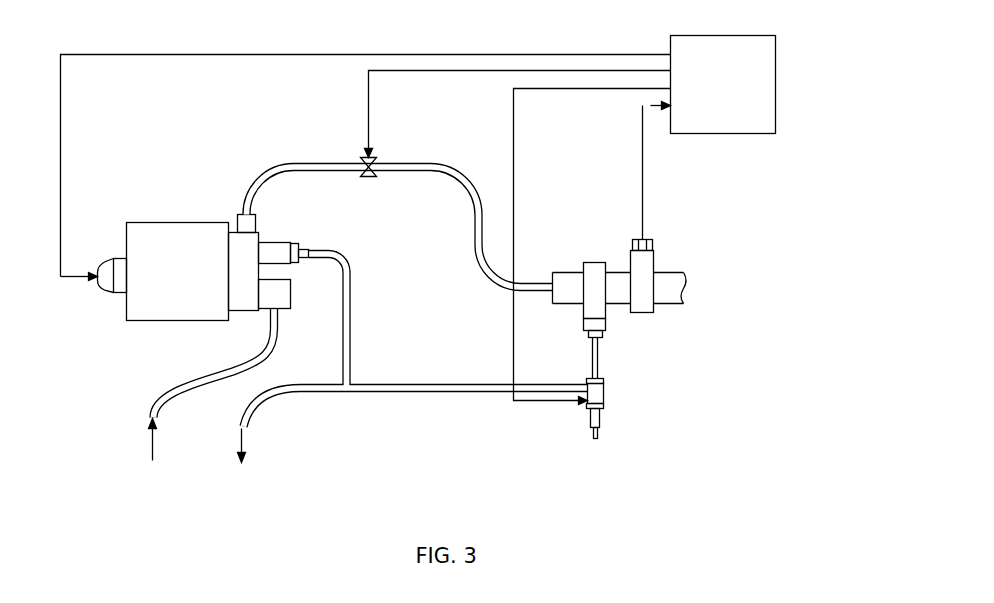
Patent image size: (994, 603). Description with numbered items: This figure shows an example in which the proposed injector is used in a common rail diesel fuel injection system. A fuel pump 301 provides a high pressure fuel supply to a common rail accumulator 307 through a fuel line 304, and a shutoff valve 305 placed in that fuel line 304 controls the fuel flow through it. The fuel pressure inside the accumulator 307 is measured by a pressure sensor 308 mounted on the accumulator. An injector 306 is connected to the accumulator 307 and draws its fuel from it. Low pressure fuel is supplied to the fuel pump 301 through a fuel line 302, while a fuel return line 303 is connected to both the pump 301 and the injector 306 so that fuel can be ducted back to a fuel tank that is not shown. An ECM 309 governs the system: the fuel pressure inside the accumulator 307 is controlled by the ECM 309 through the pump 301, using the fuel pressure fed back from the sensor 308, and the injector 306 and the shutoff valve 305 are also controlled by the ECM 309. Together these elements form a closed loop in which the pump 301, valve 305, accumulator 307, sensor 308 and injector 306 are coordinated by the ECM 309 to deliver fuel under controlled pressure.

The fuel pump 301 is at (147, 321).
The fuel line 302 is at (152, 413).
The fuel return line 303 is at (260, 399).
The fuel line 304 is at (285, 165).
The shutoff valve 305 is at (368, 178).
The injector 306 is at (605, 391).
The common rail accumulator 307 is at (673, 292).
The pressure sensor 308 is at (654, 238).
The ECM 309 is at (775, 95).